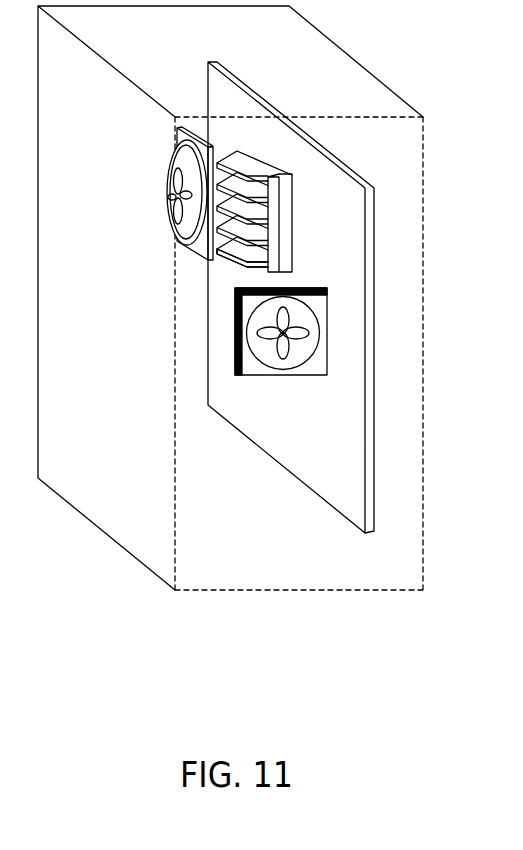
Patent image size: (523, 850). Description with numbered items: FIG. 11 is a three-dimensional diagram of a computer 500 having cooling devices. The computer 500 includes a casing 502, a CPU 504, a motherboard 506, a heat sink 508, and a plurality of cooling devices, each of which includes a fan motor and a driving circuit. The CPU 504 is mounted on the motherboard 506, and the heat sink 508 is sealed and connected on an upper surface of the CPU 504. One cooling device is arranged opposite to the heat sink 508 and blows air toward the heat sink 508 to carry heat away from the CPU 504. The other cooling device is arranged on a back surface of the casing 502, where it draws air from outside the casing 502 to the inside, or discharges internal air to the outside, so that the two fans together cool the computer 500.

The casing 502 is at (346, 50).
The motherboard 506 is at (345, 166).
The CPU 504 is at (289, 212).
The heat sink 508 is at (247, 260).
The computer 500 is at (254, 668).